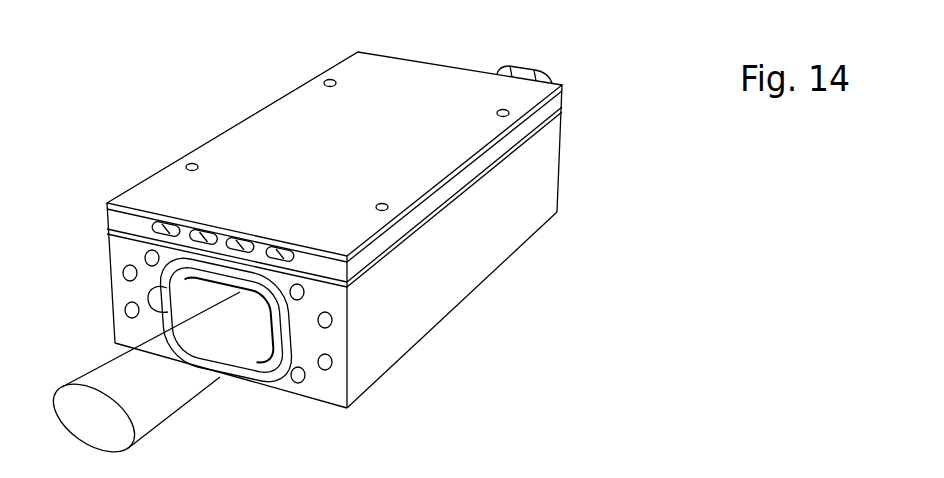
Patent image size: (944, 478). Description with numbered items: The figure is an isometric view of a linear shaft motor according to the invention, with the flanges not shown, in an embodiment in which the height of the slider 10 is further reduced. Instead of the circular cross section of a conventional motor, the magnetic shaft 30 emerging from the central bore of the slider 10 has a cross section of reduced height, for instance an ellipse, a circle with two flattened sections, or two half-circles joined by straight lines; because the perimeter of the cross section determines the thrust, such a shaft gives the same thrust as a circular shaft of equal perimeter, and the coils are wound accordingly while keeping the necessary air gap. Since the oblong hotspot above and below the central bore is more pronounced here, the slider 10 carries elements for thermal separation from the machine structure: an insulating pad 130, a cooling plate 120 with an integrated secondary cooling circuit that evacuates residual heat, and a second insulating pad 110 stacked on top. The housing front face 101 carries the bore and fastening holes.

The slider 10 is at (459, 358).
The magnetic shaft 30 is at (205, 375).
The housing 101 is at (133, 253).
The second insulating pad 110 is at (478, 158).
The cooling plate 120 is at (185, 238).
The insulating pad 130 is at (412, 236).